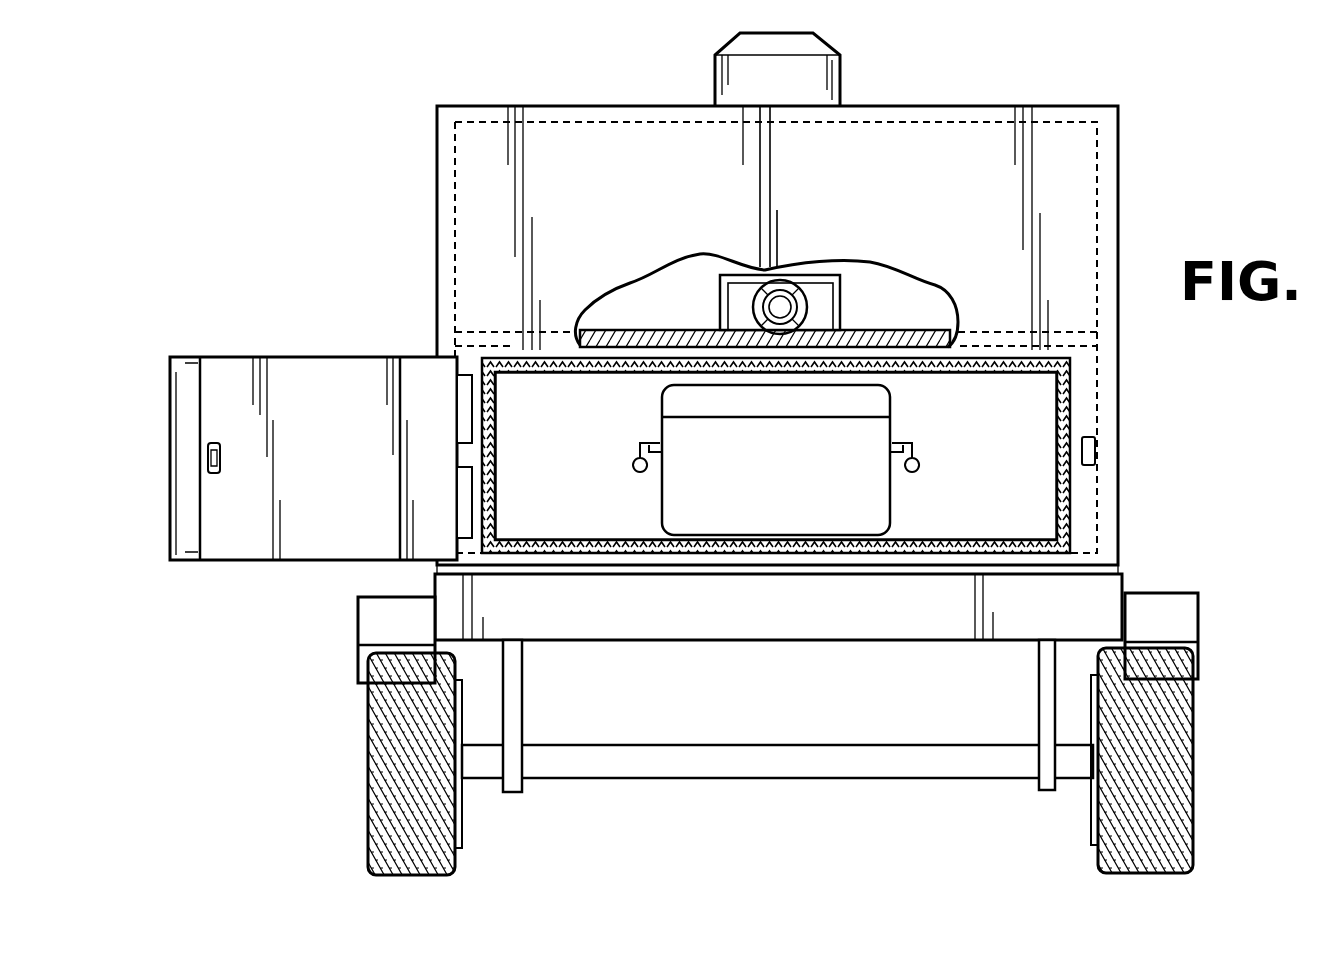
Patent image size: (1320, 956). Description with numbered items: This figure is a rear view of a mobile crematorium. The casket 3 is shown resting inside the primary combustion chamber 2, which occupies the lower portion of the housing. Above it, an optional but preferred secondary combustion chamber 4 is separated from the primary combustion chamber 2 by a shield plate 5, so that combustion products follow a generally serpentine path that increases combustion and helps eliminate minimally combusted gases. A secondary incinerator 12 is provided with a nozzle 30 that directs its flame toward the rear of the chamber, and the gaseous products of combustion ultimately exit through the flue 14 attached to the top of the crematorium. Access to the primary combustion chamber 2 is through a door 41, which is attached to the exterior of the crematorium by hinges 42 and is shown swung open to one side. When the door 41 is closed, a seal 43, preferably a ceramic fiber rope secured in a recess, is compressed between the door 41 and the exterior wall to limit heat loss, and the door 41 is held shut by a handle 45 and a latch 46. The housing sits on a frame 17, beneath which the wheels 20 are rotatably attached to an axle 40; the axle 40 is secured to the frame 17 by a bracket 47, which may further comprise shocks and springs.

The primary combustion chamber 2 is at (598, 473).
The casket 3 is at (833, 485).
The secondary combustion chamber 4 is at (660, 321).
The shield plate 5 is at (903, 330).
The secondary incinerator 12 is at (838, 300).
The flue 14 is at (797, 72).
The frame 17 is at (778, 625).
The wheels 20 is at (372, 750).
The nozzle 30 is at (817, 285).
The axle 40 is at (730, 758).
The door 41 is at (352, 396).
The hinges 42 is at (466, 417).
The seal 43 is at (615, 555).
The handle 45 is at (208, 455).
The latch 46 is at (1095, 450).
The bracket 47 is at (515, 697).